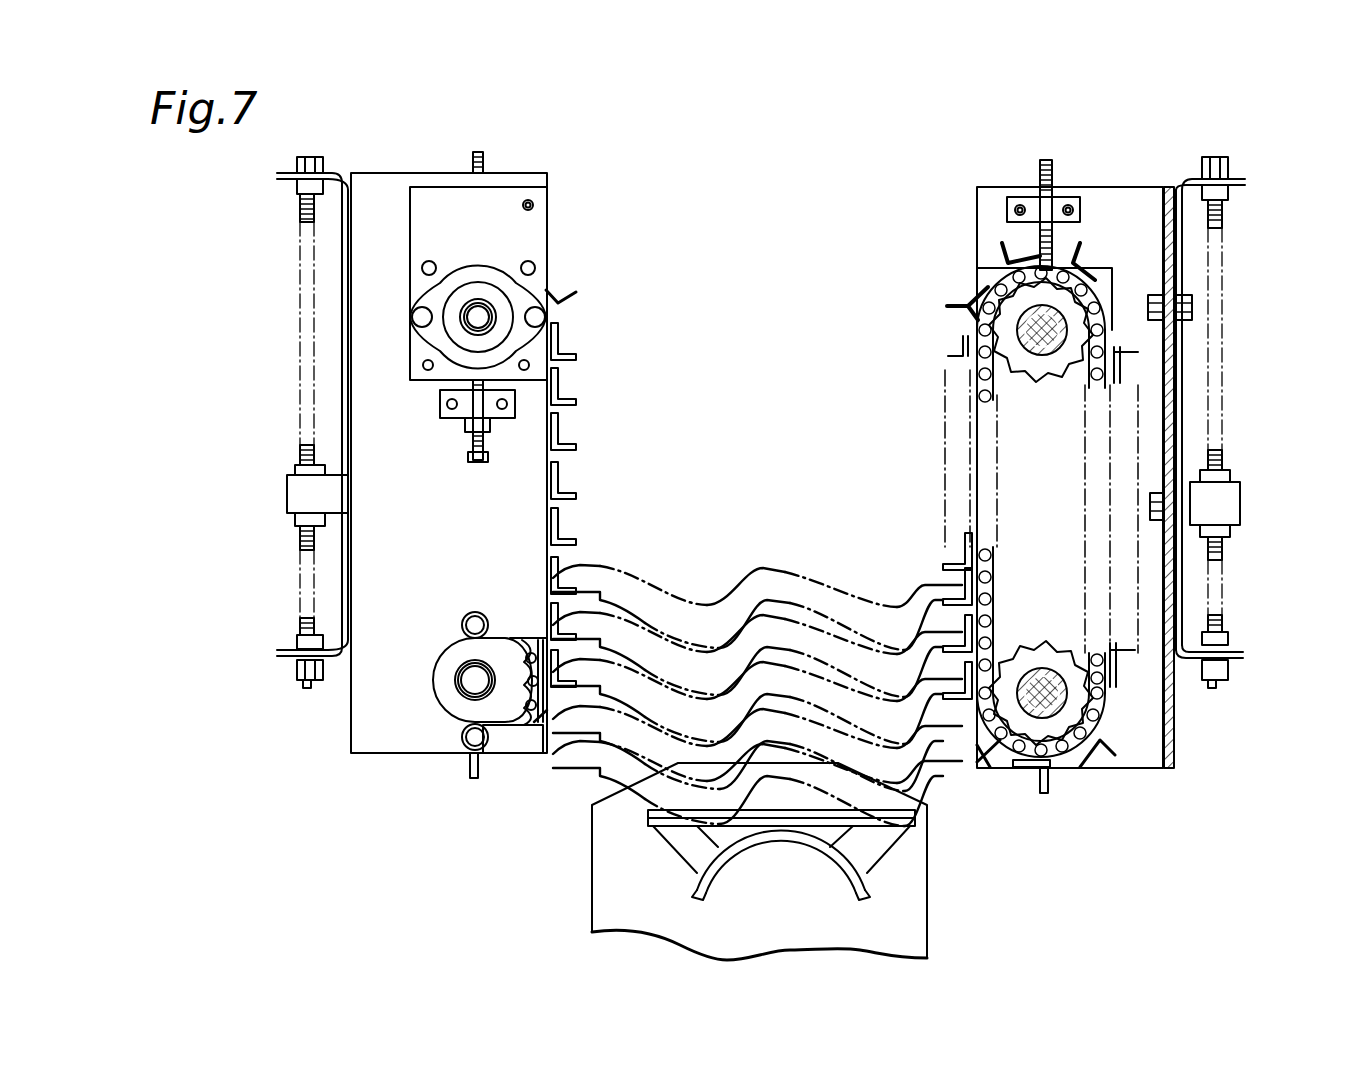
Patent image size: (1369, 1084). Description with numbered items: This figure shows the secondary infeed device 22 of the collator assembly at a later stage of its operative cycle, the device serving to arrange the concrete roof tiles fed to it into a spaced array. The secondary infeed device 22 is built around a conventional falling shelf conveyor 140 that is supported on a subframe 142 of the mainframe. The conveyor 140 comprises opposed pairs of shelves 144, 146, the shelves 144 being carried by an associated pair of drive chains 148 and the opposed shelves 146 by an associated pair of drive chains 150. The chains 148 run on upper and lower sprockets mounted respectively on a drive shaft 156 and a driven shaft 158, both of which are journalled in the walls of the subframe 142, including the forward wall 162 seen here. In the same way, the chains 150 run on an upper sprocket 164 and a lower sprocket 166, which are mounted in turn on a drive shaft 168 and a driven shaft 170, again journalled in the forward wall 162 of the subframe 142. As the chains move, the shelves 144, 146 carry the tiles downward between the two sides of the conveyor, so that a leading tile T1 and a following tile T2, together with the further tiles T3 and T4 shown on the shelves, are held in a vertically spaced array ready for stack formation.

The secondary infeed device 22 is at (880, 198).
The falling shelf conveyor 140 is at (1122, 765).
The subframe 142 is at (1246, 293).
The shelves 144 is at (576, 398).
The shelves 146 is at (968, 345).
The drive chains 148 is at (532, 640).
The drive chains 150 is at (962, 360).
The drive shaft 156 is at (480, 300).
The driven shaft 158 is at (470, 678).
The forward wall 162 is at (467, 527).
The upper sprocket 164 is at (1066, 300).
The lower sprocket 166 is at (1072, 714).
The drive shaft 168 is at (1043, 345).
The driven shaft 170 is at (1044, 680).
The tile T1 is at (600, 775).
The following tile T2 is at (905, 768).
The tube T3 is at (808, 650).
The tube T4 is at (683, 614).